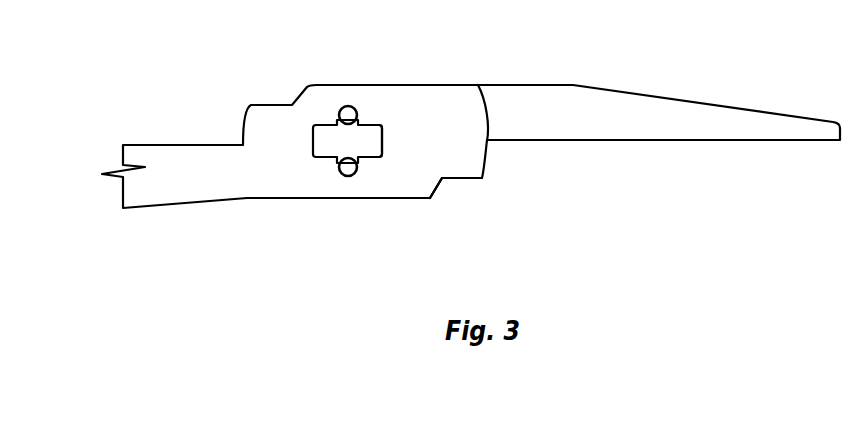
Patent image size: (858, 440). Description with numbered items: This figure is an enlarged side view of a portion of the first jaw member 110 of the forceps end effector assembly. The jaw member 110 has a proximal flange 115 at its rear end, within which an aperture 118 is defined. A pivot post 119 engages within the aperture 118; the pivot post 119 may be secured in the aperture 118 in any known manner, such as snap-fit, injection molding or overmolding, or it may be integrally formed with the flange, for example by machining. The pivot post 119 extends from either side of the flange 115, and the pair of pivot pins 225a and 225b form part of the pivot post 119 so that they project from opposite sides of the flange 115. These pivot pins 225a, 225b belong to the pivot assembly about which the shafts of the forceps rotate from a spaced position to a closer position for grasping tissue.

The jaw member 110 is at (598, 132).
The proximal flange 115 is at (460, 168).
The aperture 118 is at (391, 143).
The pivot post 119 is at (325, 148).
The pivot pin 225a is at (347, 166).
The pivot pin 225b is at (348, 116).